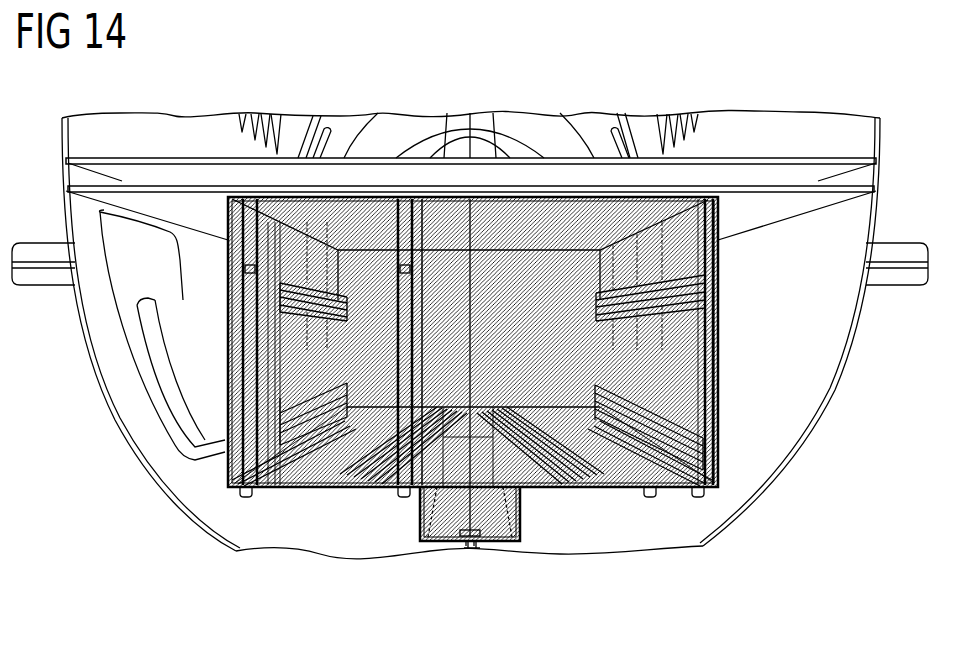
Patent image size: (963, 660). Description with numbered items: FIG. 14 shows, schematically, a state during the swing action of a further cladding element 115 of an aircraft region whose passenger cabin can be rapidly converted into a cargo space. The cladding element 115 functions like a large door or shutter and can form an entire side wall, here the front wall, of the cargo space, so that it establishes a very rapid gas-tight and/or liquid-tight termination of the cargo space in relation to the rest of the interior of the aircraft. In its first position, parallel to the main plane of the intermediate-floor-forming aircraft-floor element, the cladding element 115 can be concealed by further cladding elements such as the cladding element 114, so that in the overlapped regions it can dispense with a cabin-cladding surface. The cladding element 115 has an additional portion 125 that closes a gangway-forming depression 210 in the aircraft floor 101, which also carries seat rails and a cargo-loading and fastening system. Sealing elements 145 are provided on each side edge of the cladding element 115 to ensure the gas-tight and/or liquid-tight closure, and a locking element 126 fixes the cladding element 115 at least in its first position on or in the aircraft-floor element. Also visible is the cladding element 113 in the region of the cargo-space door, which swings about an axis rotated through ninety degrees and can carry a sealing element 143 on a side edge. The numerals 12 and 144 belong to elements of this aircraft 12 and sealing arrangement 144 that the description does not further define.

The appliance 12 is at (470, 347).
The aircraft-floor element 101 is at (665, 462).
The cladding element 113 is at (306, 470).
The cladding element 114 is at (465, 410).
The cladding element 115 is at (643, 463).
The additional portion 125 is at (493, 527).
The locking element 126 is at (490, 522).
The sealing element 143 is at (124, 372).
The second guide 144 is at (226, 309).
The sealing element 145 is at (830, 444).
The gangway-forming depression 210 is at (473, 409).